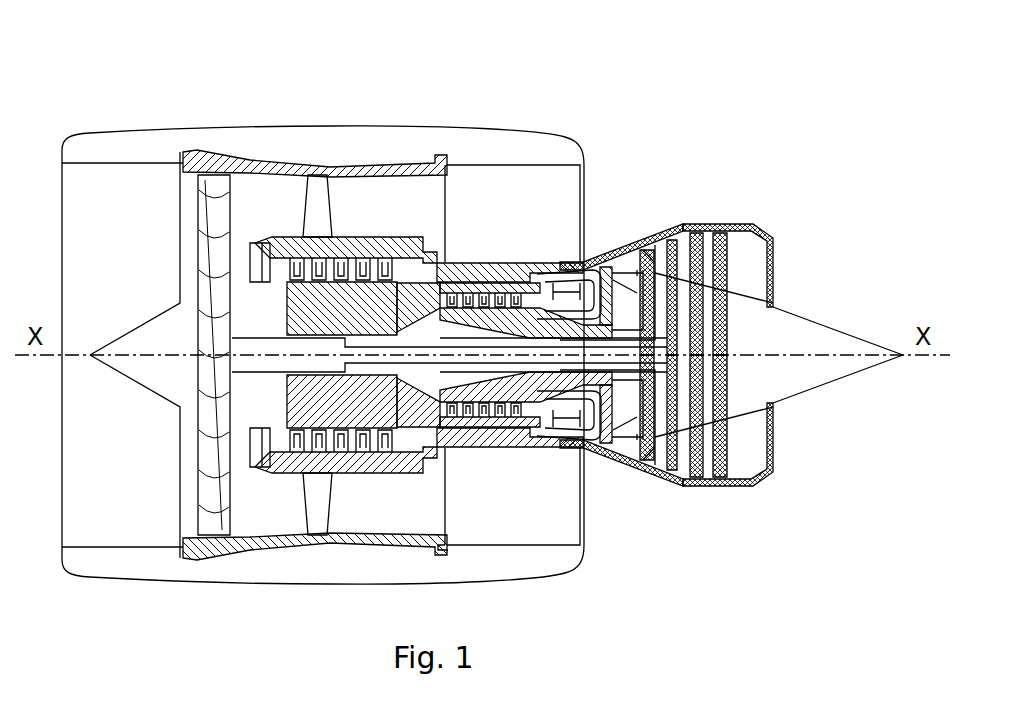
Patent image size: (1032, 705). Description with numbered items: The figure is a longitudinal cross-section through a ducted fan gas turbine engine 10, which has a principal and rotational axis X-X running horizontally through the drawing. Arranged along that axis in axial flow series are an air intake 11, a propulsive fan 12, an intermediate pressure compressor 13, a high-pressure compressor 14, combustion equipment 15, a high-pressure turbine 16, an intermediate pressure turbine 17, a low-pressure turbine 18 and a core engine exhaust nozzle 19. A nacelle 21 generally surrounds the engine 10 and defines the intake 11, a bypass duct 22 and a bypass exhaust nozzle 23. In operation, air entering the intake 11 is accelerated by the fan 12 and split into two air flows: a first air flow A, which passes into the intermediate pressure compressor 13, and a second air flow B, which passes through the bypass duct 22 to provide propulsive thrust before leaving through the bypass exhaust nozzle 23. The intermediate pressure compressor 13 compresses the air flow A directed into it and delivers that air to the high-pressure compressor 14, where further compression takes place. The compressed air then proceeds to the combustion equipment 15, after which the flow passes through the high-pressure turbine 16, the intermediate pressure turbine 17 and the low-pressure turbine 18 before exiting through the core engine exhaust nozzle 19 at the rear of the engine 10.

The ducted fan gas turbine engine 10 is at (98, 78).
The air intake 11 is at (116, 165).
The propulsive fan 12 is at (205, 493).
The intermediate pressure compressor 13 is at (363, 462).
The high-pressure compressor 14 is at (488, 270).
The combustion equipment 15 is at (520, 455).
The high-pressure turbine 16 is at (575, 455).
The intermediate pressure turbine 17 is at (640, 247).
The low-pressure turbine 18 is at (660, 465).
The core engine exhaust nozzle 19 is at (762, 228).
The nacelle 21 is at (366, 127).
The bypass duct 22 is at (553, 198).
The bypass exhaust nozzle 23 is at (587, 152).